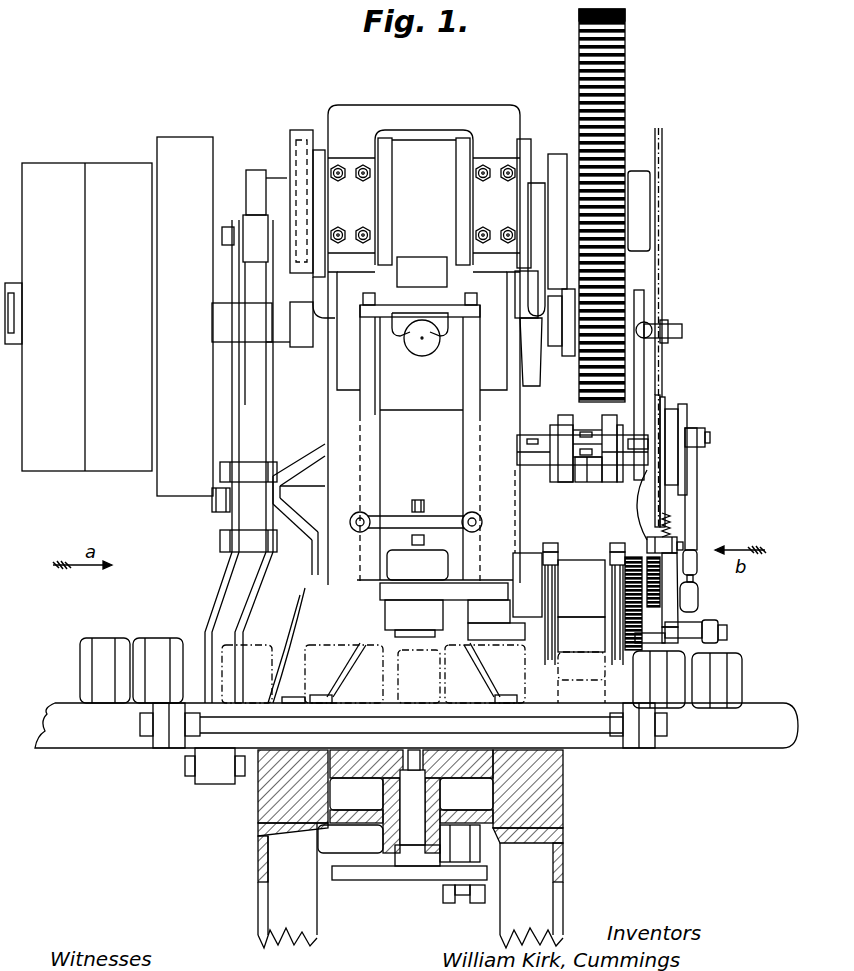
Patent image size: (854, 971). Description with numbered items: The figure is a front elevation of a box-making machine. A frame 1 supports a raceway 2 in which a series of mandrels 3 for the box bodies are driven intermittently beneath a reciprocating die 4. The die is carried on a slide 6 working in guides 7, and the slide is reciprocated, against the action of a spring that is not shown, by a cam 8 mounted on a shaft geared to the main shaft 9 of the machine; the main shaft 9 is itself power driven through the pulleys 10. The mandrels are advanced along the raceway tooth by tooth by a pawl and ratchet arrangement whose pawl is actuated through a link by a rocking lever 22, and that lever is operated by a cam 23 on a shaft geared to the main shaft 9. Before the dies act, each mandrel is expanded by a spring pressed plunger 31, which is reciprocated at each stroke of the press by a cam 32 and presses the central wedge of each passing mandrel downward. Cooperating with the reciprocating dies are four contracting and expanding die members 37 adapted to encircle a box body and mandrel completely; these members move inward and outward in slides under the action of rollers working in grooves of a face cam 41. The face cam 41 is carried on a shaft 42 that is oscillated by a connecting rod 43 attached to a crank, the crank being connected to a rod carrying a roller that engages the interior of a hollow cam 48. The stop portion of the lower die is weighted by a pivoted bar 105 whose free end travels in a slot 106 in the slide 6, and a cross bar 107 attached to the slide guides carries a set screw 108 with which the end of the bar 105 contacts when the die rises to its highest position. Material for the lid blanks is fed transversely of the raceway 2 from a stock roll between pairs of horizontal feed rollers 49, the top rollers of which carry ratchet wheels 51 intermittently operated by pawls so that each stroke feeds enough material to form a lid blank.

The frame 1 is at (563, 826).
The raceway 2 is at (416, 743).
The mandrels 3 is at (153, 648).
The reciprocating die 4 is at (501, 632).
The slide 6 is at (416, 494).
The guides 7 is at (435, 477).
The cam 8 is at (424, 208).
The main shaft 9 is at (282, 334).
The pulleys 10 is at (93, 472).
The rocking lever 22 is at (252, 588).
The cam 23 is at (254, 171).
The spring pressed plunger 31 is at (670, 525).
The cam 32 is at (665, 463).
The die members 37 is at (453, 667).
The face cam 41 is at (495, 778).
The shaft 42 is at (408, 832).
The connecting rod 43 is at (565, 850).
The hollow cam 48 is at (297, 130).
The feed rollers 49 is at (586, 623).
The ratchet wheels 51 is at (690, 585).
The bar 105 is at (487, 536).
The slot 106 is at (415, 500).
The cross bar 107 is at (393, 520).
The set screw 108 is at (425, 503).